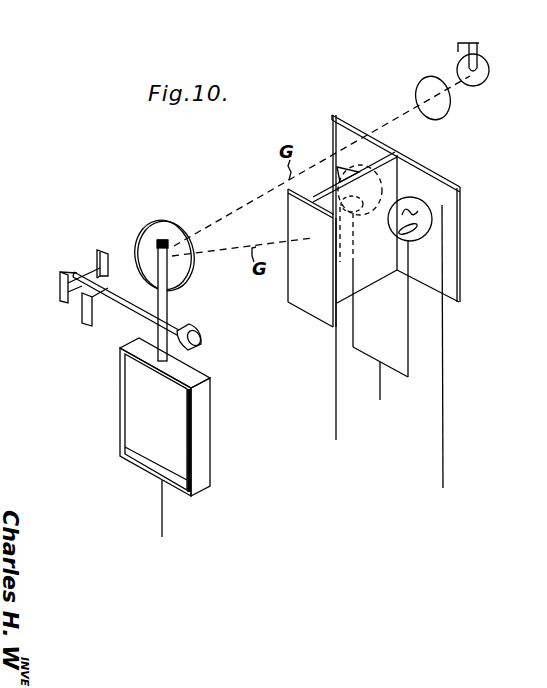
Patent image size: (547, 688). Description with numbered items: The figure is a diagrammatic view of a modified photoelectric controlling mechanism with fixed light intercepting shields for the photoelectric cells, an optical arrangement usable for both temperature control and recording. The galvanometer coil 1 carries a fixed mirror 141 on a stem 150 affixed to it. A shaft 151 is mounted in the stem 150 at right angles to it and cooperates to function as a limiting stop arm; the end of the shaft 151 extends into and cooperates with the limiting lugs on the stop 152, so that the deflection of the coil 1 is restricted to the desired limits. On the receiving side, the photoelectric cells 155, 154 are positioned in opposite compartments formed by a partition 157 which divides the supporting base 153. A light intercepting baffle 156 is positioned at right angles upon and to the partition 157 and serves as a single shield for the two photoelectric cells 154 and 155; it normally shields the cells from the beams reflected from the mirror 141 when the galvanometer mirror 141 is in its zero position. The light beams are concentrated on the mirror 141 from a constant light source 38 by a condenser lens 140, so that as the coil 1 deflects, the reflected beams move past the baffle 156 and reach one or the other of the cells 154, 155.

The galvanometer coil 1 is at (179, 437).
The constant light source 38 is at (500, 64).
The condenser lens 140 is at (463, 97).
The fixed mirror 141 is at (178, 239).
The stem 150 is at (191, 300).
The shaft 151 is at (138, 311).
The stop 152 is at (55, 288).
The supporting base 153 is at (406, 208).
The photoelectric cell 154 is at (446, 211).
The photoelectric cell 155 is at (355, 259).
The light intercepting baffle 156 is at (308, 273).
The partition 157 is at (380, 309).